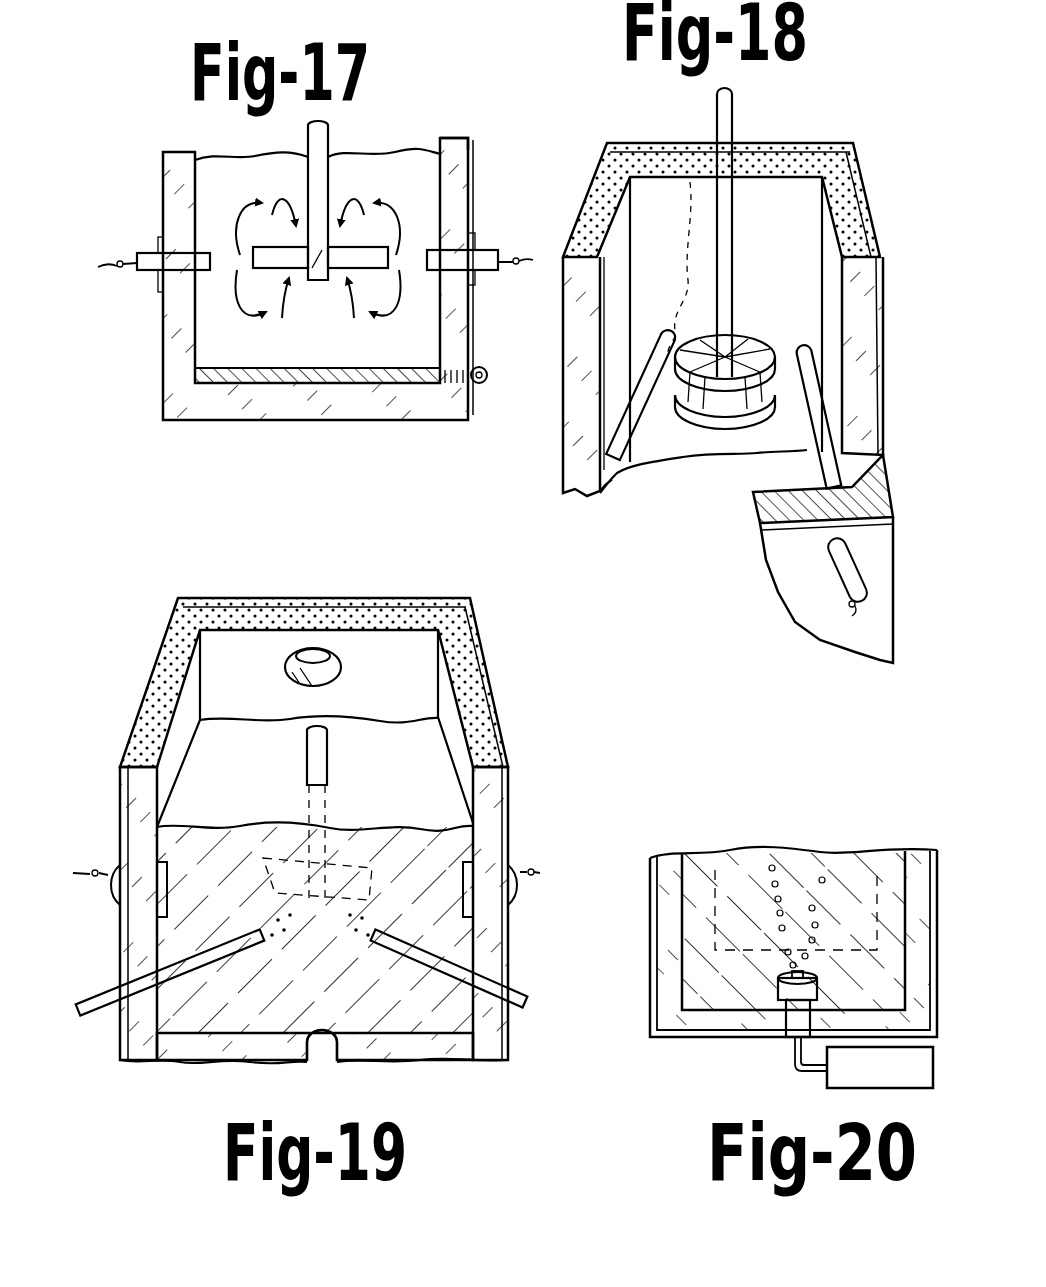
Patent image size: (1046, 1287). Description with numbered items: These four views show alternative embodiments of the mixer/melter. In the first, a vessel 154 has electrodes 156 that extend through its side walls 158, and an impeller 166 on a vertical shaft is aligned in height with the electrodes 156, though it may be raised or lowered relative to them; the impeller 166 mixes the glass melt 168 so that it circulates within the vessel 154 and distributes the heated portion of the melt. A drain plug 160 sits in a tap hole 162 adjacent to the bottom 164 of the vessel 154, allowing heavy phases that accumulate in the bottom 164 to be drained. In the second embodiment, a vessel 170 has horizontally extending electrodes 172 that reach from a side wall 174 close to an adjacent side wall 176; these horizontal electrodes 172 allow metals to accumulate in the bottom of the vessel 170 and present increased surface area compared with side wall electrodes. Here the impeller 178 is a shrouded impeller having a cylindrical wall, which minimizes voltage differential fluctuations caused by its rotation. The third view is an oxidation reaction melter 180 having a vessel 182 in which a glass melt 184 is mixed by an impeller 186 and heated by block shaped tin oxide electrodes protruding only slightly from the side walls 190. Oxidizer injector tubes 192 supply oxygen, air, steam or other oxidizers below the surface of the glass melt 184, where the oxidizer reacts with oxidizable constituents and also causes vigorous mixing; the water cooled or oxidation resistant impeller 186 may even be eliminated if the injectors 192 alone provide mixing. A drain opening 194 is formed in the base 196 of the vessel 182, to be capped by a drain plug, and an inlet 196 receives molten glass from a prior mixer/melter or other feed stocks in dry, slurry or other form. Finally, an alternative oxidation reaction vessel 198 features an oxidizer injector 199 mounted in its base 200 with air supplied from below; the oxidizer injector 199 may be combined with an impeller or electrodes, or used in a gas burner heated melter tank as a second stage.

In FIG. 17, the vessel 154 is at (470, 150).
In FIG. 17, the electrodes 156 is at (148, 273).
In FIG. 17, the side walls 158 is at (163, 210).
In FIG. 17, the drain plug 160 is at (488, 380).
In FIG. 17, the tap hole 162 is at (430, 410).
In FIG. 17, the bottom 164 is at (340, 420).
In FIG. 17, the impeller 166 is at (318, 235).
In FIG. 17, the glass melt 168 is at (357, 172).
In FIG. 18, the vessel 170 is at (825, 140).
In FIG. 18, the horizontally extending electrodes 172 is at (802, 348).
In FIG. 18, the side wall 174 is at (675, 272).
In FIG. 18, the adjacent side wall 176 is at (620, 473).
In FIG. 18, the shrouded impeller 178 is at (740, 330).
In FIG. 19, the oxidation reaction melter 180 is at (512, 640).
In FIG. 19, the vessel 182 is at (492, 687).
In FIG. 19, the glass melt 184 is at (400, 765).
In FIG. 19, the impeller 186 is at (378, 825).
In FIG. 19, the side walls 190 is at (465, 800).
In FIG. 19, the oxidizer injector tubes 192 is at (88, 1016).
In FIG. 19, the drain opening 194 is at (325, 1042).
In FIG. 19, the base 196 is at (327, 650).
In FIG. 20, the oxidation reaction vessel 198 is at (685, 808).
In FIG. 20, the oxidizer injector 199 is at (785, 1010).
In FIG. 20, the base 200 is at (700, 1037).